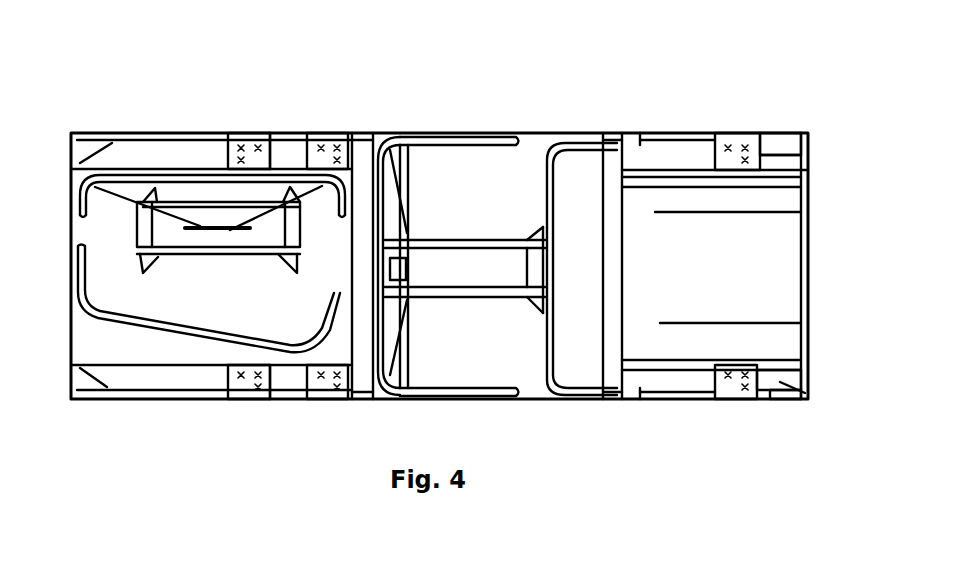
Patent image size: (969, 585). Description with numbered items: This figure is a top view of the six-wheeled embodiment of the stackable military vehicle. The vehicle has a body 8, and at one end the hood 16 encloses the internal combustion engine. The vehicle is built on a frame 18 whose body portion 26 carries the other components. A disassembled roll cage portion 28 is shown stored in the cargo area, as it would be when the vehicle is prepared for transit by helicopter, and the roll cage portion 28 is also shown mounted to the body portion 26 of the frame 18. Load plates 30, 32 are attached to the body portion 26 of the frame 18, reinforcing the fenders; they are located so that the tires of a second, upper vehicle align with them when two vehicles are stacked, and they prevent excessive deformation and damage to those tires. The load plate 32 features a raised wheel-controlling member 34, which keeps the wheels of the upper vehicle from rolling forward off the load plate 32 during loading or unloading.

The body 8 is at (535, 400).
The hood 16 is at (740, 265).
The frame 18 is at (386, 396).
The body portion 26 is at (360, 135).
The roll cage portion 28 is at (252, 340).
The load plates 30 is at (248, 133).
The load plate 32 is at (727, 138).
The wheel-controlling member 34 is at (805, 393).